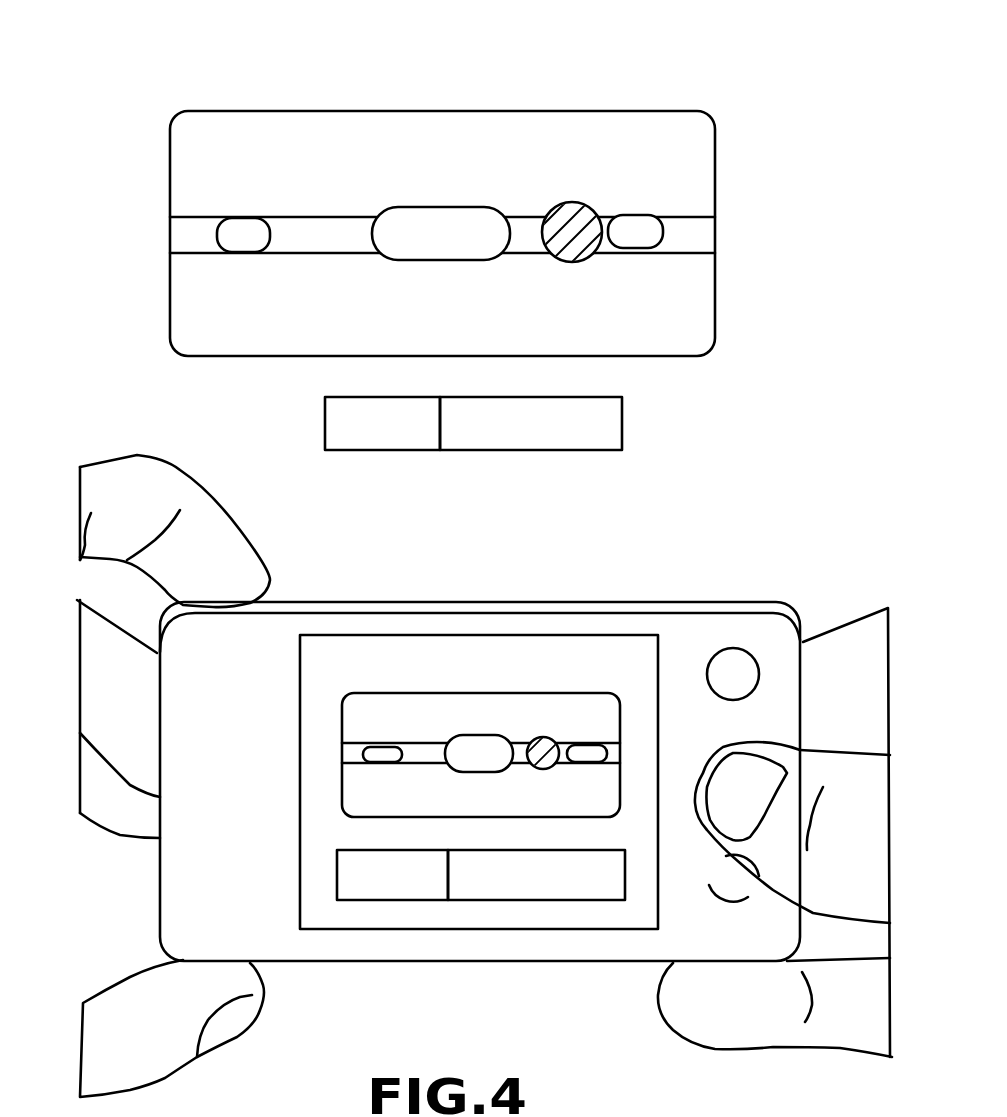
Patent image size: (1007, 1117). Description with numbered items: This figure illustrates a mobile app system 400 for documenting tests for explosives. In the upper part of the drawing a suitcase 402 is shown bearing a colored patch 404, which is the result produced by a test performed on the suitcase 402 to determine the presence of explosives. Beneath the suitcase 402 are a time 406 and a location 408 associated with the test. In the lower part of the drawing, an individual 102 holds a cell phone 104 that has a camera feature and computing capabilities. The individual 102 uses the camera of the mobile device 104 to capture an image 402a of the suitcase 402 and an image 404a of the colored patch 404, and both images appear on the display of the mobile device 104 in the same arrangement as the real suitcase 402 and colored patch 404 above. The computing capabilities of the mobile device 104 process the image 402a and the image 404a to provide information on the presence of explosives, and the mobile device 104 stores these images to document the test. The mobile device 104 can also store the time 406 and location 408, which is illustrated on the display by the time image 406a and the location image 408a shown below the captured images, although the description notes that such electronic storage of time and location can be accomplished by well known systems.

The system 400 is at (672, 60).
The suitcase 402 is at (378, 169).
The colored patch 404 is at (585, 203).
The time 406 is at (325, 420).
The location 408 is at (622, 420).
The individual 102 is at (872, 876).
The cell phone 104 is at (755, 600).
The image of the suitcase 402a is at (425, 693).
The image of the results 404a is at (545, 738).
The time image 406a is at (390, 900).
The location image 408a is at (512, 900).